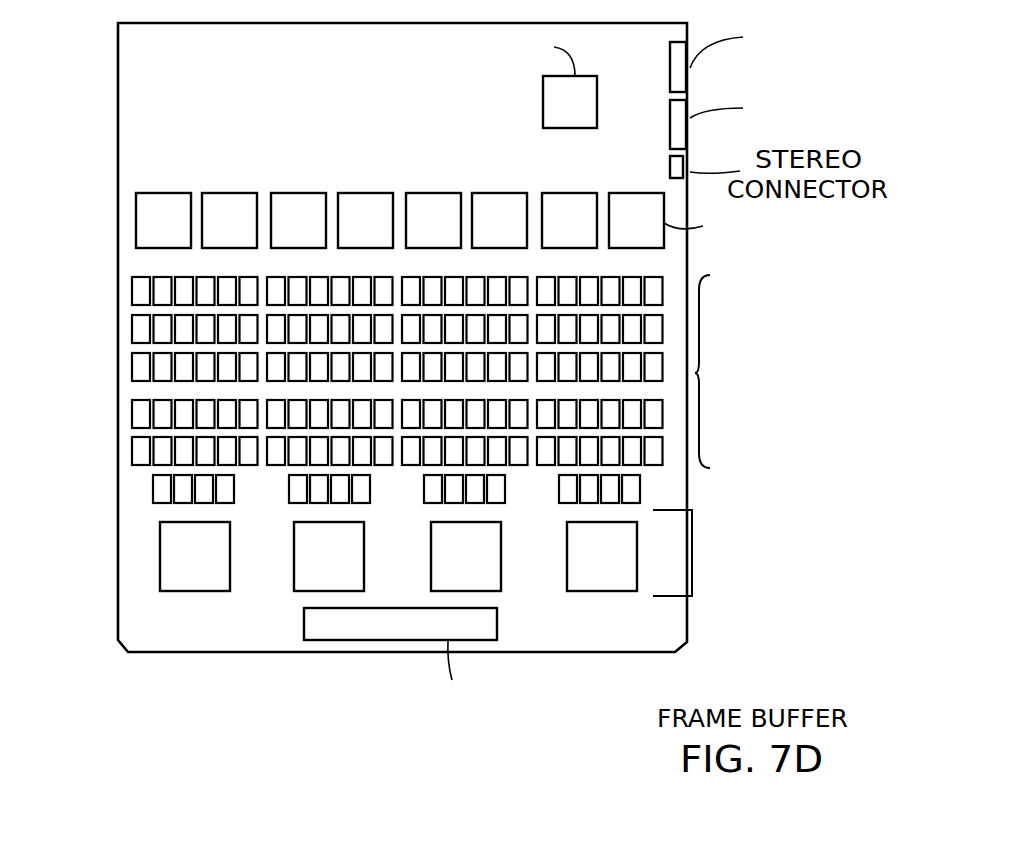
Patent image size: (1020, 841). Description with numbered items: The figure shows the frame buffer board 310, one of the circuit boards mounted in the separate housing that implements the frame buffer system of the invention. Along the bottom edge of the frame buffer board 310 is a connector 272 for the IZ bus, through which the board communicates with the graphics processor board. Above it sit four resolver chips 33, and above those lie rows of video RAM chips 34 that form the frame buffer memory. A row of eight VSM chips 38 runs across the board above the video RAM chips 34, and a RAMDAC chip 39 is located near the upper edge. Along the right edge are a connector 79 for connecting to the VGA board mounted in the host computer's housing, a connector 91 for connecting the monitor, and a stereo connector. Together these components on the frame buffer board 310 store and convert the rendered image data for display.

The frame buffer board 310 is at (118, 77).
The RAMDAC chip 39 is at (543, 95).
The connector 79 is at (670, 62).
The connector 91 is at (670, 126).
The VSM chips 38 is at (102, 227).
The video RAM chips 34 is at (101, 389).
The resolver chips 33 is at (99, 567).
The connector 272 is at (304, 625).